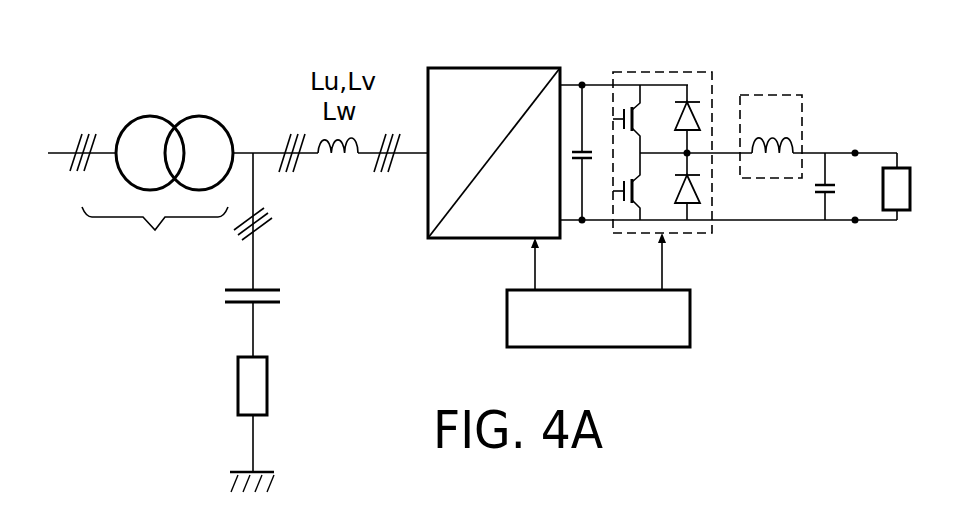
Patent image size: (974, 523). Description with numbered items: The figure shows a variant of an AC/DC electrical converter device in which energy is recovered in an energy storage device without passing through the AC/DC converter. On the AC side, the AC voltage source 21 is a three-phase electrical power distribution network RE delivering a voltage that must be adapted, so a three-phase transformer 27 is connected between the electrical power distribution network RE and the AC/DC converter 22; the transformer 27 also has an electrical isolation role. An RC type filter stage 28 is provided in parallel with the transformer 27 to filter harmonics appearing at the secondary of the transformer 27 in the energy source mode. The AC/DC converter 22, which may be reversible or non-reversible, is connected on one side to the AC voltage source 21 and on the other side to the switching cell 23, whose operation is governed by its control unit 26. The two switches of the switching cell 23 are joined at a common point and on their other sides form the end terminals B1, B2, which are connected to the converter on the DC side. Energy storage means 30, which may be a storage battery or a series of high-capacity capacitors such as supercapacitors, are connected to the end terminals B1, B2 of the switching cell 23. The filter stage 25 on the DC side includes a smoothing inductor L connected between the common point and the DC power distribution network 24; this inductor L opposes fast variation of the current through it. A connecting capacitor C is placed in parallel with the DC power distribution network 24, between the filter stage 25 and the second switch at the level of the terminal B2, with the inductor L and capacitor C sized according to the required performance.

The AC voltage source 21 is at (157, 191).
The AC/DC converter 22 is at (497, 90).
The switching cell 23 is at (672, 72).
The DC power distribution network 24 is at (897, 198).
The filter stage 25 is at (773, 96).
The control unit 26 is at (518, 302).
The transformer 27 is at (145, 130).
The RC type filter stage 28 is at (237, 317).
The energy storage means 30 is at (577, 150).
The electrical power distribution network RE is at (70, 142).
The end terminal B1 is at (624, 73).
The end terminal B2 is at (728, 236).
The connecting capacitor C is at (835, 190).
The smoothing inductor L is at (773, 124).